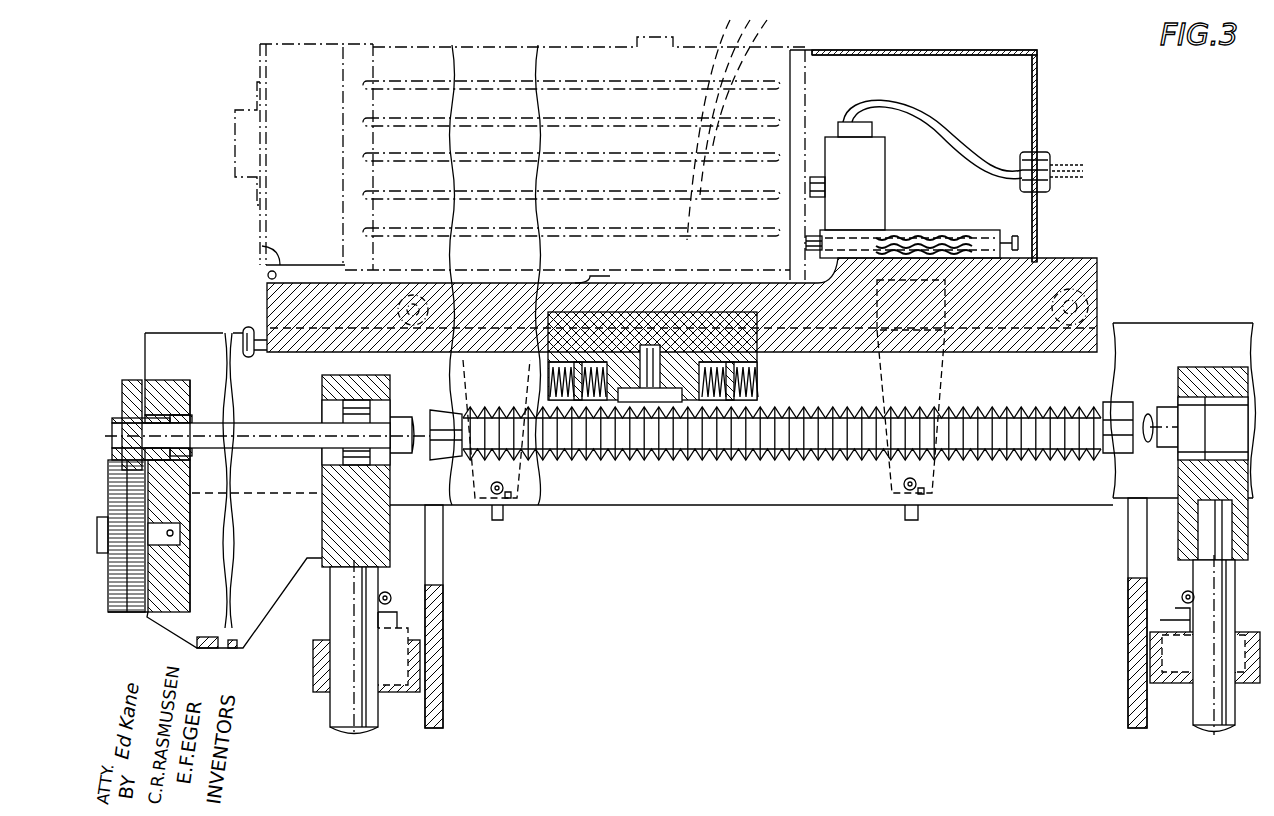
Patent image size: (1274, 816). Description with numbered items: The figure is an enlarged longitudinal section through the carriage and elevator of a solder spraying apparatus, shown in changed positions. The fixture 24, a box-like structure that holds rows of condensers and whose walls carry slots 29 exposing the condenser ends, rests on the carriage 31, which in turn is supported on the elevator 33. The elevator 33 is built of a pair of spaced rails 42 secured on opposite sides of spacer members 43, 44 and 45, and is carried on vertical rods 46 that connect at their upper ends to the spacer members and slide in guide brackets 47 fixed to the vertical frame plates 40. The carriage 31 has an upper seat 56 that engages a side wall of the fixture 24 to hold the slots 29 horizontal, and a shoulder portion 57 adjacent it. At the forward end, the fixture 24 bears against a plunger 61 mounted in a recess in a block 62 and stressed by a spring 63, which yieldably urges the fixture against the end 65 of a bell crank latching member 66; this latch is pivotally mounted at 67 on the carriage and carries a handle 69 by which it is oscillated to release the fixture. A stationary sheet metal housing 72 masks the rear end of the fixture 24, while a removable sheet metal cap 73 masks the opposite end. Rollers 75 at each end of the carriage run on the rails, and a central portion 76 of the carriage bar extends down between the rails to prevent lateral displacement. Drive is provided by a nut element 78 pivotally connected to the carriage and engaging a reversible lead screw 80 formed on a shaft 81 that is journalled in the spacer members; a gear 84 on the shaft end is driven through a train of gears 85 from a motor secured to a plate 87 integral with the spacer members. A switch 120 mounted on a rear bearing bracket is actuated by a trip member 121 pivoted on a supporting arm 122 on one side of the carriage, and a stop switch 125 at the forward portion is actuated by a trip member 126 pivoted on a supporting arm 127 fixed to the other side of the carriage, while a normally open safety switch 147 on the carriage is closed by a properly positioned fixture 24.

The fixture 24 is at (503, 45).
The slots 29 is at (738, 42).
The carriage 31 is at (1100, 245).
The elevator 33 is at (1165, 322).
The vertical frame plates 40 is at (445, 718).
The rails 42 is at (190, 422).
The spacer member 43 is at (187, 495).
The spacer member 44 is at (330, 490).
The spacer member 45 is at (1190, 485).
The vertical rods 46 is at (338, 725).
The guide brackets 47 is at (408, 700).
The upper surface or seat 56 is at (577, 280).
The shoulder 57 is at (718, 282).
The plunger 61 is at (815, 243).
The block 62 is at (898, 230).
The spring 63 is at (940, 235).
The end of latching member 65 is at (343, 262).
The bell crank latching member 66 is at (262, 248).
The pivot 67 is at (268, 274).
The handle 69 is at (246, 327).
The sheet metal housing 72 is at (1037, 75).
The sheet metal cap 73 is at (262, 53).
The rollers 75 is at (415, 295).
The central portion 76 is at (1022, 352).
The nut element 78 is at (647, 406).
The reversible lead screw 80 is at (780, 462).
The shaft 81 is at (263, 430).
The gear 84 is at (137, 380).
The train of gears 85 is at (108, 460).
The plate 87 is at (243, 645).
The switch 120 is at (1185, 620).
The trip member 121 is at (912, 505).
The supporting arm 122 is at (945, 380).
The stop switch 125 is at (395, 625).
The trip member 126 is at (496, 520).
The supporting arm 127 is at (455, 392).
The safety switch 147 is at (880, 162).